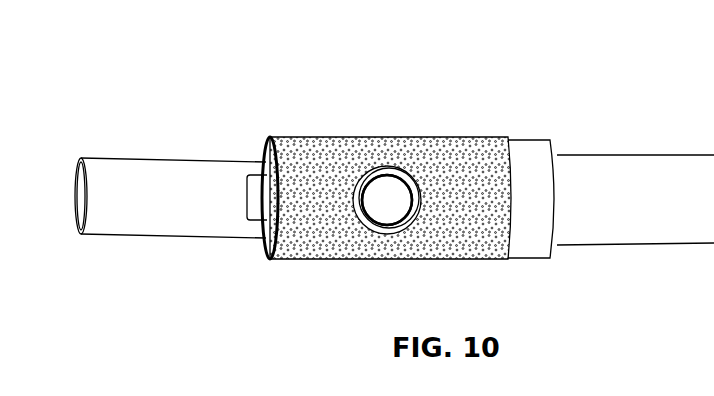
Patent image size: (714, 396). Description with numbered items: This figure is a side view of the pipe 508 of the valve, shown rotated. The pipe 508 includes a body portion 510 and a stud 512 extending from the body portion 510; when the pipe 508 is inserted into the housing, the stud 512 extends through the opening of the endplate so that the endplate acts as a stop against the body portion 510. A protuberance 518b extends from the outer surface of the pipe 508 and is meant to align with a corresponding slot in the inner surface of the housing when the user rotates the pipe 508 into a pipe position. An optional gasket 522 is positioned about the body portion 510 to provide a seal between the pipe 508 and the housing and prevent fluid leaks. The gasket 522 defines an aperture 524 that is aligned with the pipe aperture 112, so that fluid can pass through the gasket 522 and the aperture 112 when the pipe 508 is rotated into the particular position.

The pipe 508 is at (468, 70).
The body portion 510 is at (635, 153).
The stud 512 is at (148, 226).
The protuberance 518b is at (262, 192).
The gasket 522 is at (468, 247).
The aperture 112 is at (394, 178).
The aperture 524 is at (388, 235).